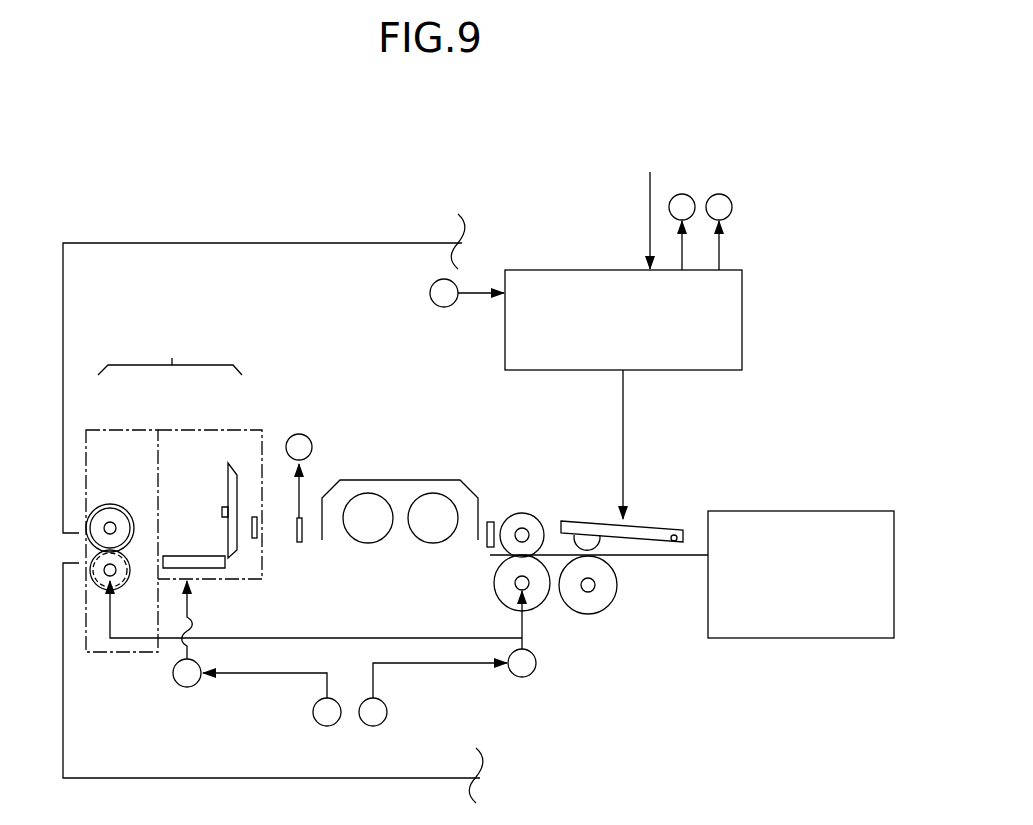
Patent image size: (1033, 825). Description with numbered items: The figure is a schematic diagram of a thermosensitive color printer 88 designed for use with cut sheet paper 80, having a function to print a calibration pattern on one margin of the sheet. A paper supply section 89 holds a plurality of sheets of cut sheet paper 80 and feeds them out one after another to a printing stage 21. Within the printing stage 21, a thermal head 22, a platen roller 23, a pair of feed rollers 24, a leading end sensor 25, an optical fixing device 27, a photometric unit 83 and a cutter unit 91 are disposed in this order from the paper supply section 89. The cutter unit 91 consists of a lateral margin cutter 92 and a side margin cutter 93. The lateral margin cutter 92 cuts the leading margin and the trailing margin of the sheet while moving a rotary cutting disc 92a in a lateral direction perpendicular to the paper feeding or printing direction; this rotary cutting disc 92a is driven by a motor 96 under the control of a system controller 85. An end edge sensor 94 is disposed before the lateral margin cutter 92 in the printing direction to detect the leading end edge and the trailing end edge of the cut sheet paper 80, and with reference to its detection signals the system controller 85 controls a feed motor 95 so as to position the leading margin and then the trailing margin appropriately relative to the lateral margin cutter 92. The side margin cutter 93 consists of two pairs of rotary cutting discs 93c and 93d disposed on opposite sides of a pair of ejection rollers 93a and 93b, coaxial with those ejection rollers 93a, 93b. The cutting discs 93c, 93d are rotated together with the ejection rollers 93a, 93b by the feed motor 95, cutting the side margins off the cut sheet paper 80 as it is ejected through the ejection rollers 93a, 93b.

The printing stage 21 is at (647, 517).
The thermal head 22 is at (577, 524).
The platen roller 23 is at (607, 601).
The pair of feed rollers 24 is at (539, 607).
The leading end sensor 25 is at (491, 521).
The optical fixing device 27 is at (381, 478).
The cut sheet paper 80 is at (667, 557).
The photometric unit 83 is at (300, 542).
The system controller 85 is at (677, 370).
The printer 88 is at (324, 238).
The paper supply section 89 is at (713, 638).
The cutter unit 91 is at (170, 354).
The lateral margin cutter 92 is at (204, 428).
The rotary cutting disc 92a is at (228, 468).
The side margin cutter 93 is at (107, 428).
The ejection roller 93a is at (109, 504).
The ejection roller 93b is at (127, 585).
The rotary cutting discs 93c is at (89, 504).
The rotary cutting discs 93d is at (100, 587).
The end edge sensor 94 is at (255, 516).
The feed motor 95 is at (533, 676).
The motor 96 is at (186, 688).